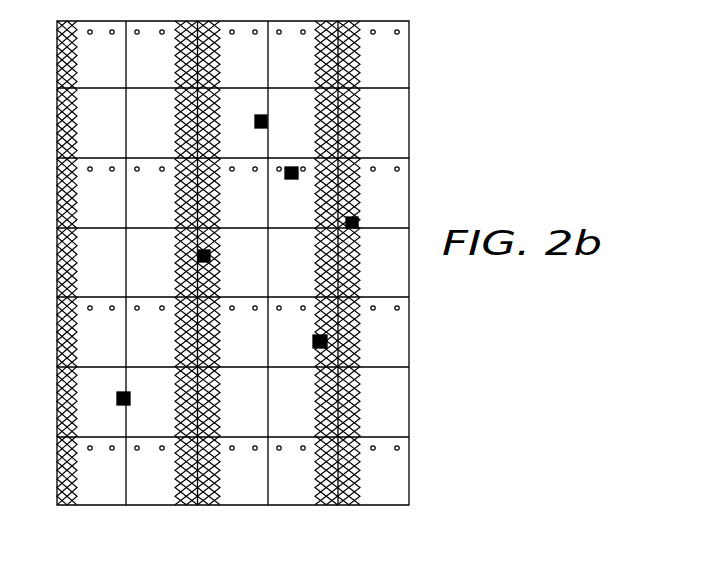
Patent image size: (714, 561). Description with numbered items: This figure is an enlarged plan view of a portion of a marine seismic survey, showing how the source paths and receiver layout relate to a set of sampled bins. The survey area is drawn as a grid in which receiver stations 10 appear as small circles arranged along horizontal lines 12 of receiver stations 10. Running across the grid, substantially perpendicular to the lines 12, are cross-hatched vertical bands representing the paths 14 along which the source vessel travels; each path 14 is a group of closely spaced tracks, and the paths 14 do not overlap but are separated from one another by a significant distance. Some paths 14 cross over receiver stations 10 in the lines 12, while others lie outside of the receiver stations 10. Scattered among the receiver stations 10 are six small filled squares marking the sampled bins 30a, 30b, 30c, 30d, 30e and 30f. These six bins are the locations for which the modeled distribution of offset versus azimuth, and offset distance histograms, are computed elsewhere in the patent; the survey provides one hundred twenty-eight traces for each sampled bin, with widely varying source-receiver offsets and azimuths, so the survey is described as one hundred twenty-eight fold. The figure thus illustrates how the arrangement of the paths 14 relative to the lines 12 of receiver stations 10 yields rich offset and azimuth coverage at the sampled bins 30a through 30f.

The receiver station 10 is at (137, 34).
The line of receiver stations 12 is at (399, 31).
The path 14 is at (66, 507).
The sampled bin 30a is at (121, 392).
The sampled bin 30b is at (210, 256).
The sampled bin 30c is at (260, 115).
The sampled bin 30d is at (318, 348).
The sampled bin 30e is at (358, 222).
The sampled bin 30f is at (291, 179).